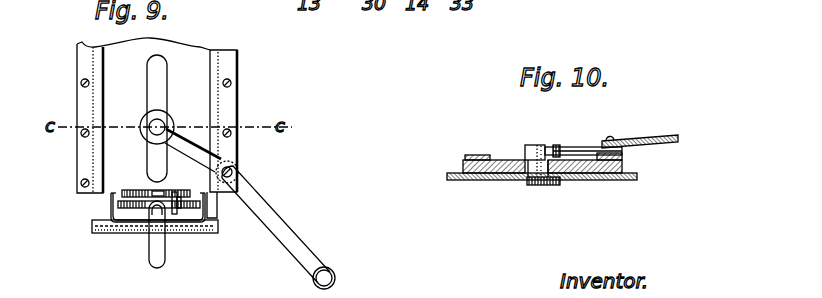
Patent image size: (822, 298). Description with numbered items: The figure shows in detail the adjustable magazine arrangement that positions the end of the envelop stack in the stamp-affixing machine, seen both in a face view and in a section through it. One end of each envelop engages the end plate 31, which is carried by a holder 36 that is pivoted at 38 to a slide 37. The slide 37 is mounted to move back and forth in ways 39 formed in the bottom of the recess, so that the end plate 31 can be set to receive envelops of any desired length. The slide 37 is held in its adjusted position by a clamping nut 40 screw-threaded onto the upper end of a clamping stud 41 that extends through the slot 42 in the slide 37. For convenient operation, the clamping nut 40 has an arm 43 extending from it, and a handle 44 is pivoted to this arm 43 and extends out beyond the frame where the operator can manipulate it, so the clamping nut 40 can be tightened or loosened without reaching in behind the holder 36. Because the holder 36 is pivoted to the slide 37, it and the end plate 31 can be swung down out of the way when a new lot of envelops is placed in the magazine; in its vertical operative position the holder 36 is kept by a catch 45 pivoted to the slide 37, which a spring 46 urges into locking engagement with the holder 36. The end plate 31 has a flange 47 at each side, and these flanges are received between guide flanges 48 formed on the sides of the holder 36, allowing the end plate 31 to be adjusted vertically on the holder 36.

In FIG. 9, the end plate 31 is at (126, 203).
In FIG. 9, the holder 36 is at (143, 222).
In FIG. 9, the slide 37 is at (120, 163).
In FIG. 10, the slide 37 is at (503, 178).
In FIG. 9, the pivot 38 is at (95, 232).
In FIG. 9, the ways 39 is at (77, 103).
In FIG. 10, the ways 39 is at (478, 155).
In FIG. 9, the clamping nut 40 is at (152, 118).
In FIG. 10, the clamping nut 40 is at (535, 143).
In FIG. 9, the clamping stud 41 is at (145, 126).
In FIG. 10, the clamping stud 41 is at (541, 185).
In FIG. 9, the slot 42 is at (163, 80).
In FIG. 9, the arm 43 is at (203, 152).
In FIG. 10, the arm 43 is at (583, 145).
In FIG. 9, the handle 44 is at (282, 224).
In FIG. 10, the handle 44 is at (668, 141).
In FIG. 9, the catch 45 is at (158, 262).
In FIG. 9, the spring 46 is at (179, 203).
In FIG. 9, the flange 47 is at (113, 214).
In FIG. 9, the guide flanges 48 is at (110, 199).